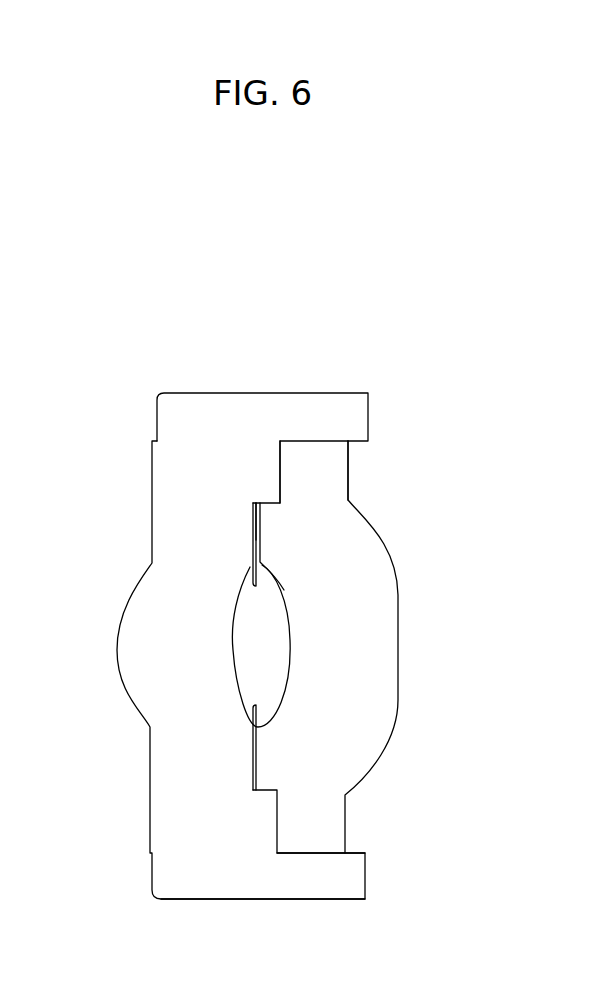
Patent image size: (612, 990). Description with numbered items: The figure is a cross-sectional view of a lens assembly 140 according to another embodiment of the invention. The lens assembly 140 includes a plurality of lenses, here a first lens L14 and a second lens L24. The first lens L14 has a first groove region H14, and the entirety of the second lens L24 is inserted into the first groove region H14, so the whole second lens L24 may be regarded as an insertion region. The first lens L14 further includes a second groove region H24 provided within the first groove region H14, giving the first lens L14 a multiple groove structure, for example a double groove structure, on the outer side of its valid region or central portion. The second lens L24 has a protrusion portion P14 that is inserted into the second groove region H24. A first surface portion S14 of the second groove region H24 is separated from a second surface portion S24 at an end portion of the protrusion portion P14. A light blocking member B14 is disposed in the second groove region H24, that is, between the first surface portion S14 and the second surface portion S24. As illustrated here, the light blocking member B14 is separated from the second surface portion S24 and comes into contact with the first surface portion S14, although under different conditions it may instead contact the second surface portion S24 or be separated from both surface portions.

The lens assembly 140 is at (426, 379).
The first groove region H14 is at (276, 469).
The second groove region H24 is at (253, 523).
The first surface portion S14 is at (253, 541).
The second surface portion S24 is at (260, 557).
The protrusion portion P14 is at (268, 535).
The light blocking member B14 is at (260, 580).
The first lens L14 is at (231, 900).
The second lens L24 is at (312, 855).